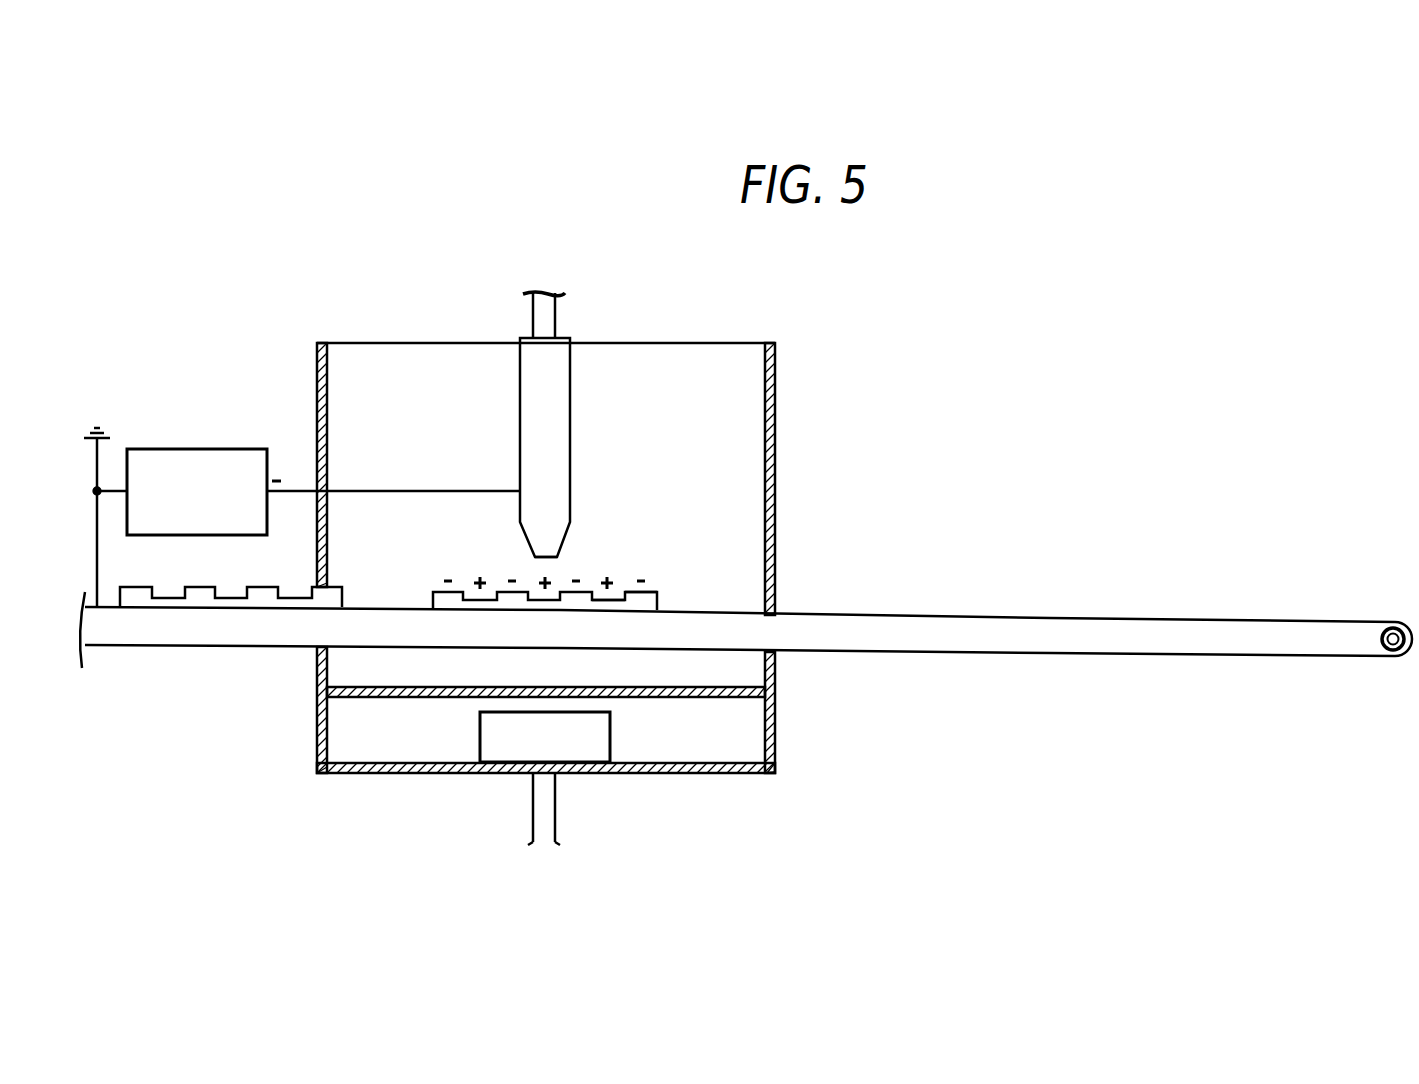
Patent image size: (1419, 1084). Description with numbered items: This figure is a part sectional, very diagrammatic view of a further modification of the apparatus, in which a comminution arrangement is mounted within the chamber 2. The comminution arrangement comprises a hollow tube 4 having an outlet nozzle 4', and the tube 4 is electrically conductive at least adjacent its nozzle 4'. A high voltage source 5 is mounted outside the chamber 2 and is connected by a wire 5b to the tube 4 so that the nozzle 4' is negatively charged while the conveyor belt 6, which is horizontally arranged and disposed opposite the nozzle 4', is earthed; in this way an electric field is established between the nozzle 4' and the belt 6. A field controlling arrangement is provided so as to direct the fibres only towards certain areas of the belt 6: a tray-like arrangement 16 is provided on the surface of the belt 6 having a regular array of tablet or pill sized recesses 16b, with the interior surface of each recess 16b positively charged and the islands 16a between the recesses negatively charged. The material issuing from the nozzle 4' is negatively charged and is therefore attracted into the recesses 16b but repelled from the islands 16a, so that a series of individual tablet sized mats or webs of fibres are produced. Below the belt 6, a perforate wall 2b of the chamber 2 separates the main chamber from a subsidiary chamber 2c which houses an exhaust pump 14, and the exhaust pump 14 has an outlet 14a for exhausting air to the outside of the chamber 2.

The chamber 2 is at (777, 368).
The perforate wall 2b is at (362, 692).
The subsidiary chamber 2c is at (748, 775).
The hollow tube 4 is at (586, 424).
The outlet nozzle 4' is at (573, 535).
The high voltage source 5 is at (185, 449).
The wire 5b is at (287, 502).
The conveyor belt 6 is at (1047, 617).
The exhaust pump 14 is at (612, 740).
The outlet 14a is at (536, 815).
The tray-like arrangement 16 is at (636, 620).
The islands 16a is at (655, 592).
The recesses 16b is at (599, 592).